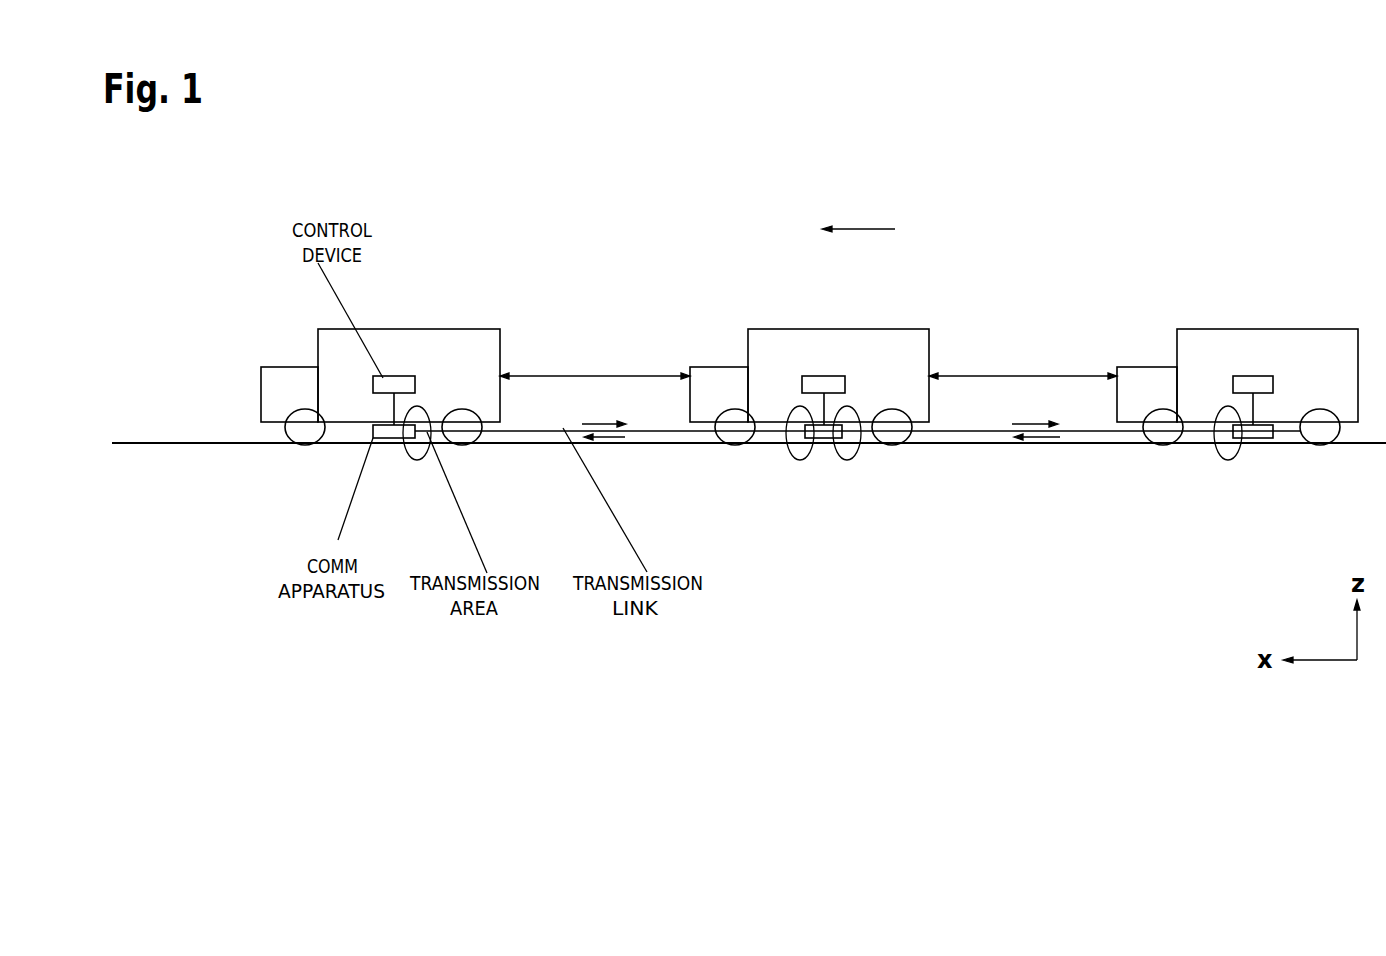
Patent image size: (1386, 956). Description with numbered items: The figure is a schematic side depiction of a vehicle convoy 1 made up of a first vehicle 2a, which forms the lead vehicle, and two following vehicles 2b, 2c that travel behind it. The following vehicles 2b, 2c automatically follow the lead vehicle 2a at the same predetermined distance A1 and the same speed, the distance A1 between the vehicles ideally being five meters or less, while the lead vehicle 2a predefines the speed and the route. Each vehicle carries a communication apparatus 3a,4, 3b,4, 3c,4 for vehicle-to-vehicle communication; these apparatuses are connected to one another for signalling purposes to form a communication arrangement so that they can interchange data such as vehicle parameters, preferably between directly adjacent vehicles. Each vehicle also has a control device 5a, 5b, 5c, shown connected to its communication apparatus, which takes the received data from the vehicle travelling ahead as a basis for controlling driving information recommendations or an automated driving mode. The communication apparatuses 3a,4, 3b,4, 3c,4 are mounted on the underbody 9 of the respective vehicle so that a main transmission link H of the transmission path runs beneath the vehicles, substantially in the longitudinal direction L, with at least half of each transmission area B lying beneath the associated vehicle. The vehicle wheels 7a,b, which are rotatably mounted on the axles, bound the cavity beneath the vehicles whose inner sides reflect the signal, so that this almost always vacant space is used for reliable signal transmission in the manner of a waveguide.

The vehicle convoy 1 is at (226, 211).
The longitudinal direction L is at (866, 228).
The underbody 9 is at (340, 447).
The first vehicle 2a is at (485, 329).
The following vehicle 2b is at (913, 329).
The following vehicle 2c is at (1343, 329).
The control device 5a is at (400, 376).
The control device 5b is at (826, 376).
The control device 5c is at (1255, 376).
The communication apparatus and communication arrangement 3a,4 is at (395, 447).
The communication apparatus and communication arrangement 3b,4 is at (825, 447).
The communication apparatus and communication arrangement 3c,4 is at (1255, 447).
The vehicle wheels 7a,b is at (280, 447).
The transmission area B is at (161, 441).
The main transmission link H is at (550, 445).
The distance A1 is at (565, 376).